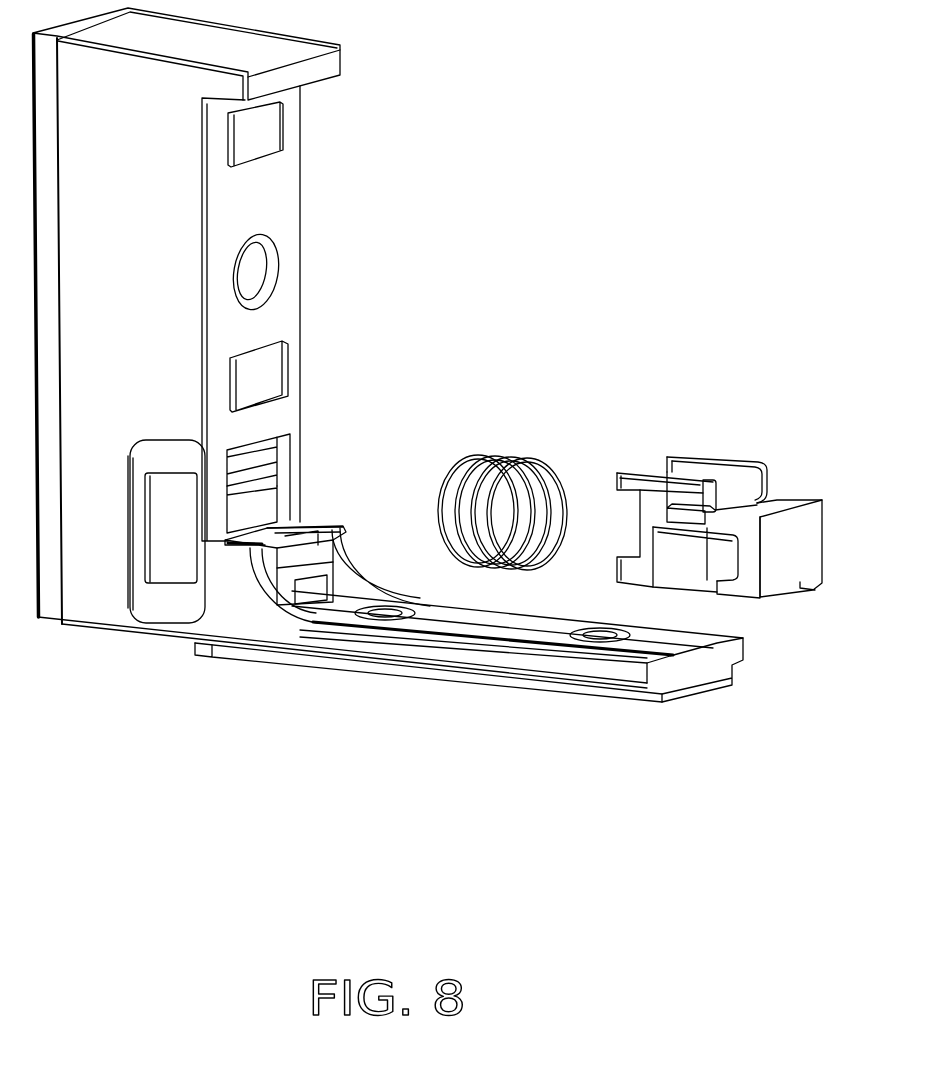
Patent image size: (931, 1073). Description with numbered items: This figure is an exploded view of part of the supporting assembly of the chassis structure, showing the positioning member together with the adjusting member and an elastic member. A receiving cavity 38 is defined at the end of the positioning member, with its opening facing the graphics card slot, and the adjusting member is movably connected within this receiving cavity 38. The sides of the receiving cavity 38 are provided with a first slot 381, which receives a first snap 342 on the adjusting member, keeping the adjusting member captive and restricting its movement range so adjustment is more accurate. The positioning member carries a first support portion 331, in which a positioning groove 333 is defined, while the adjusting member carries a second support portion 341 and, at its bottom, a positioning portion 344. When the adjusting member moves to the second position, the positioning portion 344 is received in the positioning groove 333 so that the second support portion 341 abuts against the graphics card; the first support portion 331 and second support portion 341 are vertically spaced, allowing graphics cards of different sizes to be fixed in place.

The receiving cavity 38 is at (272, 502).
The first slot 381 is at (280, 465).
The first support portion 331 is at (346, 534).
The positioning groove 333 is at (234, 548).
The second support portion 341 is at (790, 498).
The first snap 342 is at (677, 515).
The positioning portion 344 is at (764, 597).